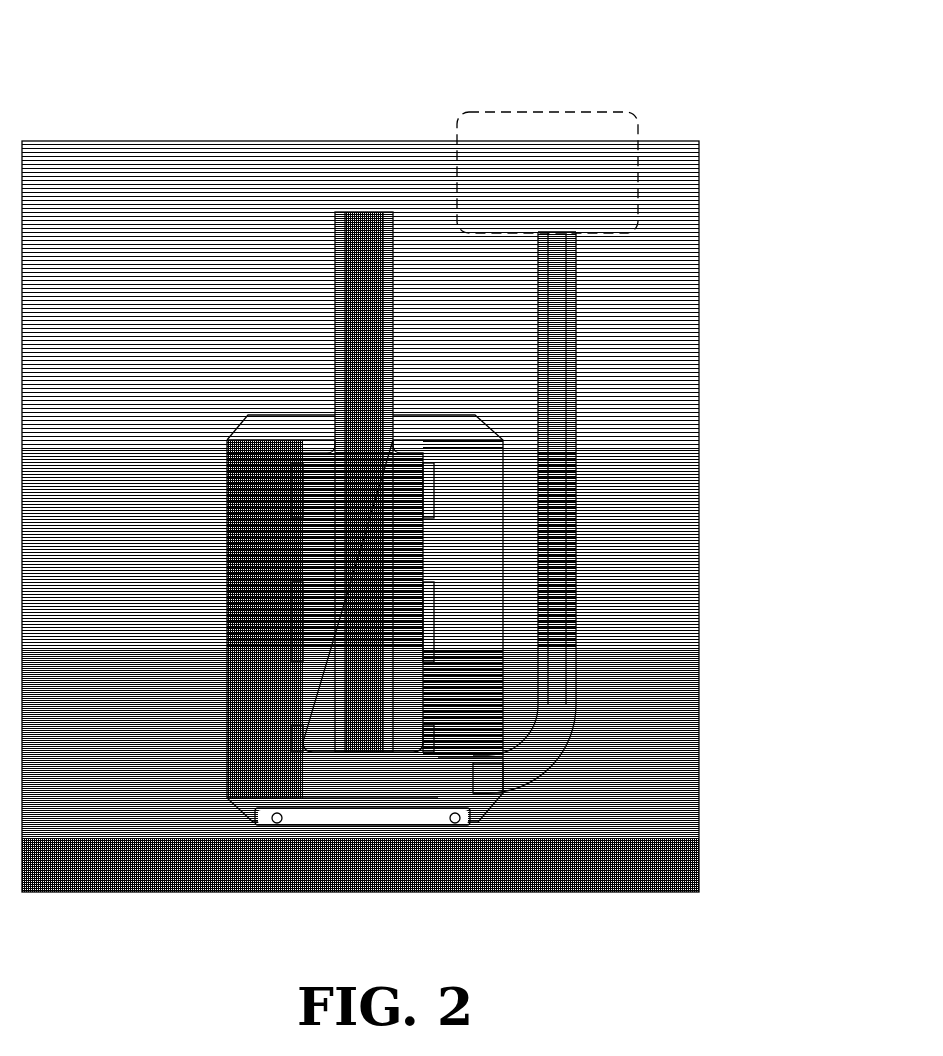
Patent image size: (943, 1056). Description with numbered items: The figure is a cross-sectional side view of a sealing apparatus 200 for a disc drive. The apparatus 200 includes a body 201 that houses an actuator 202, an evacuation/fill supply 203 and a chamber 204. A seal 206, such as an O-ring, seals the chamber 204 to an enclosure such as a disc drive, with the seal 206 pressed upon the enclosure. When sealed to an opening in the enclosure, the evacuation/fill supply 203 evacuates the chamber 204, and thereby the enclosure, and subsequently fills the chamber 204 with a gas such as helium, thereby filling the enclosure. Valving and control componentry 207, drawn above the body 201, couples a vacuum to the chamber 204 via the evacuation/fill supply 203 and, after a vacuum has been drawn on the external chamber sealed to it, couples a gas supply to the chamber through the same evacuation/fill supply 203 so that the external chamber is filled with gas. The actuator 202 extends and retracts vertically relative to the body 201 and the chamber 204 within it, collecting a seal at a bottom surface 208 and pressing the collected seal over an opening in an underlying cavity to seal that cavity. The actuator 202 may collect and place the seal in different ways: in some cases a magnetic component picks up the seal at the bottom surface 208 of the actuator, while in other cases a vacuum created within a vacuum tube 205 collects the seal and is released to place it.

The sealing apparatus 200 is at (691, 47).
The body 201 is at (265, 612).
The actuator 202 is at (280, 685).
The evacuation/fill supply 203 is at (578, 600).
The chamber 204 is at (358, 785).
The vacuum tube 205 is at (357, 243).
The seal 206 is at (275, 823).
The valving and control componentry 207 is at (587, 113).
The bottom surface 208 is at (400, 752).